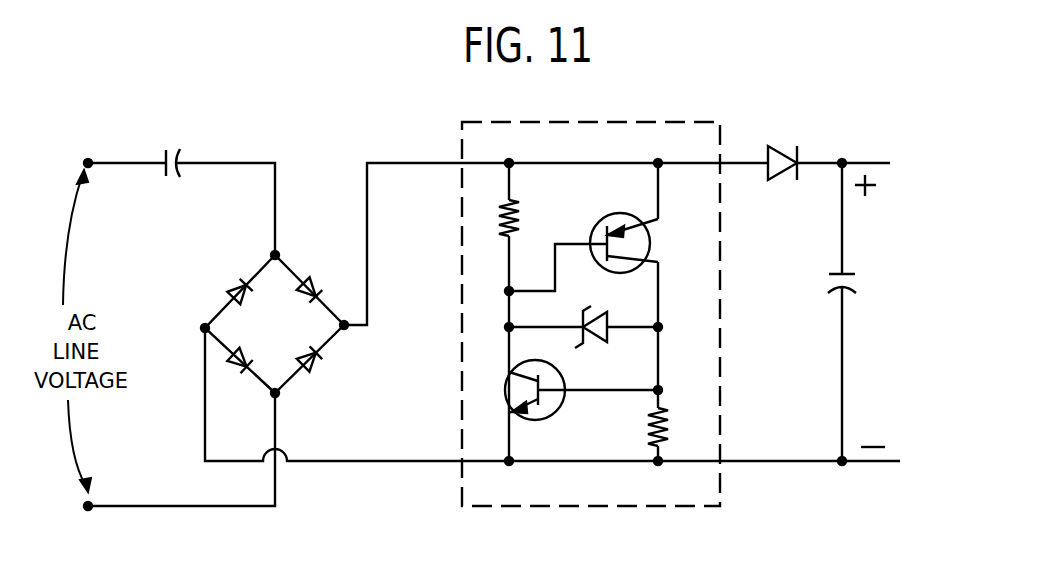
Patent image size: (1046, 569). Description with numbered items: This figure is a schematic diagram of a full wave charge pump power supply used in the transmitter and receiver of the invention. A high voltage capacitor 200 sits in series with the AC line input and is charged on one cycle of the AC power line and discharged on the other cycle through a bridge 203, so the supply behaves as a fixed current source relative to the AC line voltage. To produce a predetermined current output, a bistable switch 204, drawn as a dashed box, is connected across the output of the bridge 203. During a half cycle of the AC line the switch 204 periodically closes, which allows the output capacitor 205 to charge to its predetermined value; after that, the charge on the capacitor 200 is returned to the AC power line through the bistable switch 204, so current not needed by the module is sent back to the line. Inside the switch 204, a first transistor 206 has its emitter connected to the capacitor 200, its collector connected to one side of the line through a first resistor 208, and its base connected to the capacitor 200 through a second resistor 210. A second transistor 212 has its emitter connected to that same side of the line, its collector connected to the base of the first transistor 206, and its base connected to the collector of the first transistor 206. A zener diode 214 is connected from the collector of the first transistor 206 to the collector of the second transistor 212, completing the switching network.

The high voltage capacitor 200 is at (178, 158).
The bridge 203 is at (300, 340).
The bistable switch 204 is at (648, 122).
The capacitor 205 is at (838, 283).
The first transistor 206 is at (621, 213).
The first resistor 208 is at (641, 435).
The second resistor 210 is at (499, 211).
The second transistor 212 is at (541, 421).
The zener diode 214 is at (595, 336).